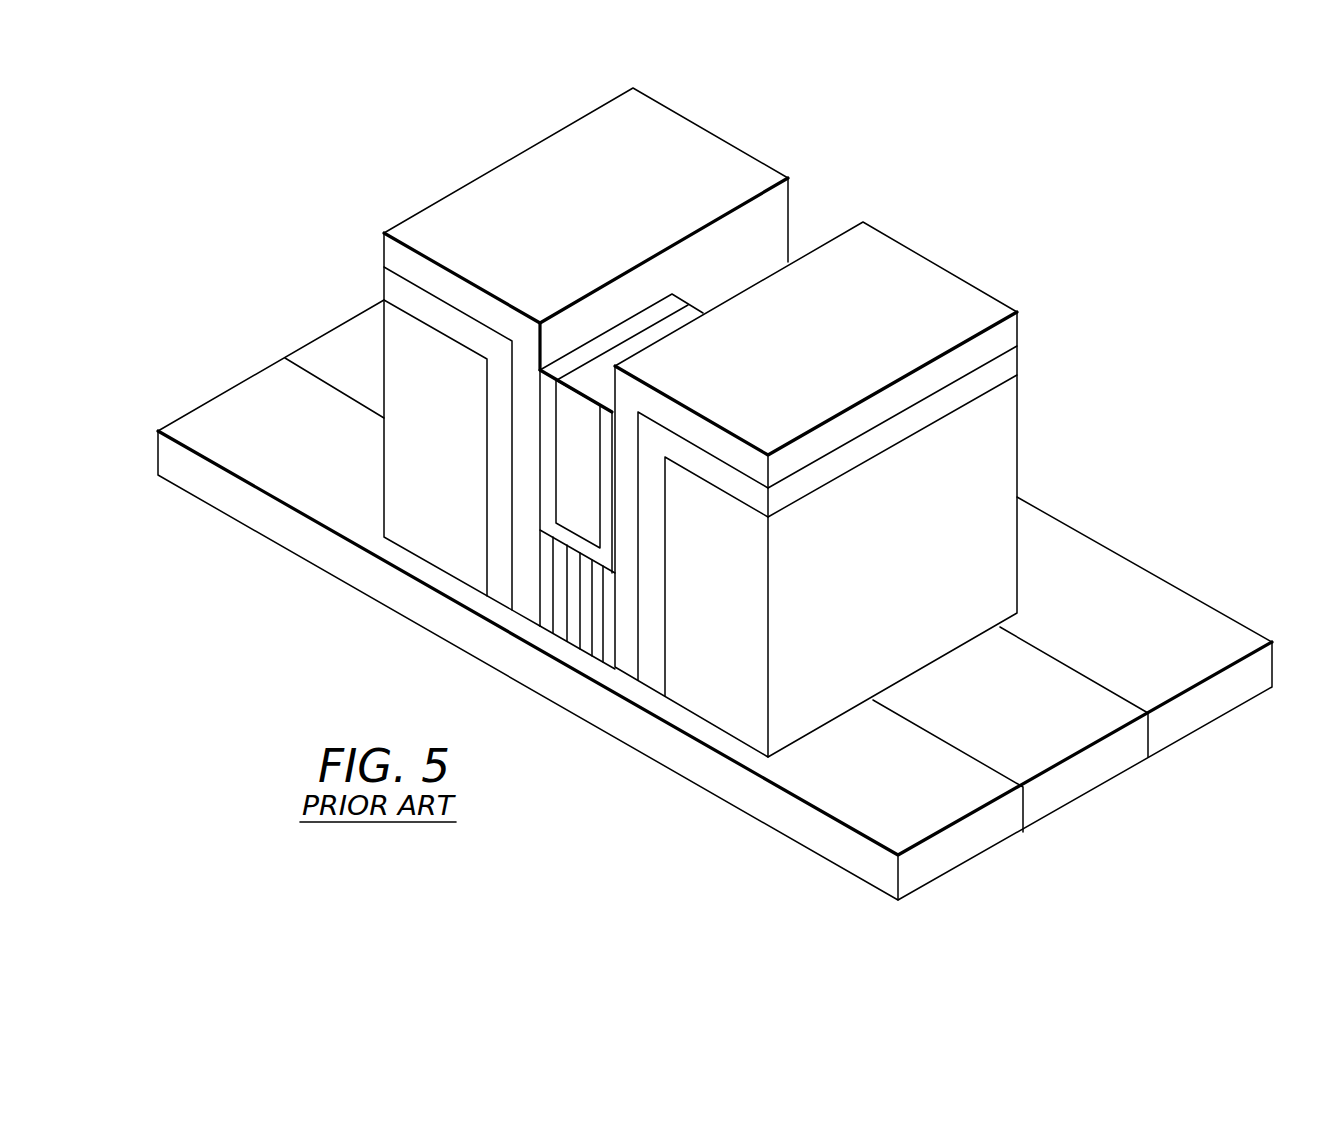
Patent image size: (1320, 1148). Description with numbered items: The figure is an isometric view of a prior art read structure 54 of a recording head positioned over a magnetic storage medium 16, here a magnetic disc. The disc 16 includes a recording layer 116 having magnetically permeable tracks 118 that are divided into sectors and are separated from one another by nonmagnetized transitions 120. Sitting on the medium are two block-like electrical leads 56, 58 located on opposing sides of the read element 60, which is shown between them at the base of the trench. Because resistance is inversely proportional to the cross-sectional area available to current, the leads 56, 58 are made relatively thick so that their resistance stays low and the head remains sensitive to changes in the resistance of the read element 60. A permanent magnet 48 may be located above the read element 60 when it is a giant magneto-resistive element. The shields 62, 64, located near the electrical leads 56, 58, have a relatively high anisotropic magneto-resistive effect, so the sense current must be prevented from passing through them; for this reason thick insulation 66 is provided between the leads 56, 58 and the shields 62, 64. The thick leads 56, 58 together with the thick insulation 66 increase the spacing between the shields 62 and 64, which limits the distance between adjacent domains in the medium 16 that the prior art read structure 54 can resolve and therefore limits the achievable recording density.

The magnetic storage medium 16 is at (208, 377).
The recording layer 116 is at (1070, 628).
The magnetically permeable tracks 118 is at (1162, 657).
The nonmagnetized transitions 120 is at (1032, 740).
The read structure 54 is at (927, 170).
The electrical lead 58 is at (628, 204).
The shield 64 is at (450, 463).
The electrical lead 56 is at (865, 338).
The shield 62 is at (878, 613).
The thick insulation 66 is at (952, 399).
The permanent magnet 48 is at (593, 473).
The read element 60 is at (596, 606).